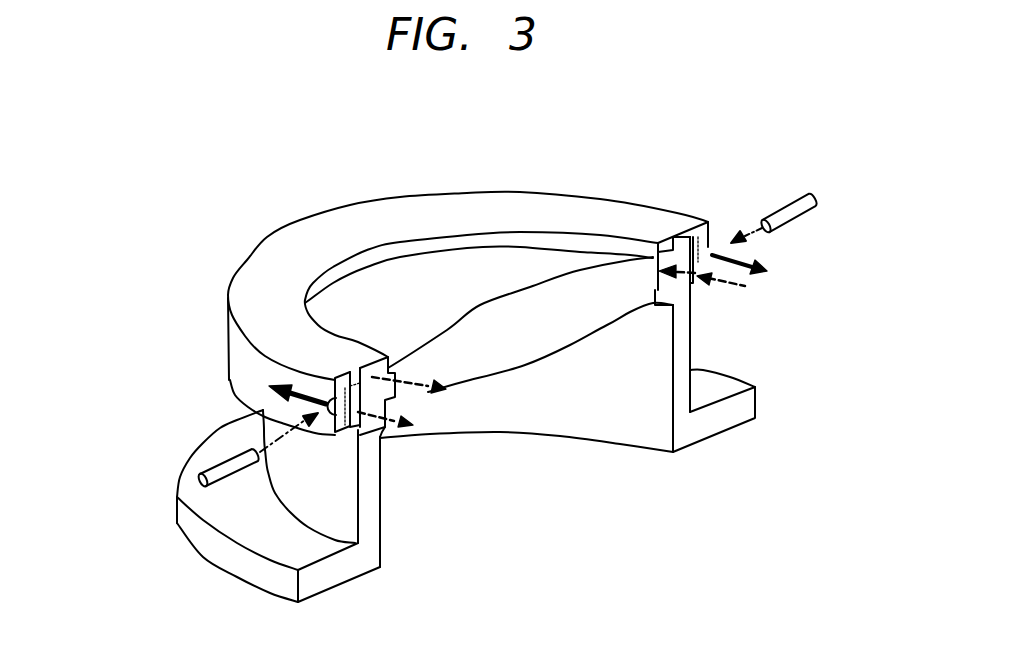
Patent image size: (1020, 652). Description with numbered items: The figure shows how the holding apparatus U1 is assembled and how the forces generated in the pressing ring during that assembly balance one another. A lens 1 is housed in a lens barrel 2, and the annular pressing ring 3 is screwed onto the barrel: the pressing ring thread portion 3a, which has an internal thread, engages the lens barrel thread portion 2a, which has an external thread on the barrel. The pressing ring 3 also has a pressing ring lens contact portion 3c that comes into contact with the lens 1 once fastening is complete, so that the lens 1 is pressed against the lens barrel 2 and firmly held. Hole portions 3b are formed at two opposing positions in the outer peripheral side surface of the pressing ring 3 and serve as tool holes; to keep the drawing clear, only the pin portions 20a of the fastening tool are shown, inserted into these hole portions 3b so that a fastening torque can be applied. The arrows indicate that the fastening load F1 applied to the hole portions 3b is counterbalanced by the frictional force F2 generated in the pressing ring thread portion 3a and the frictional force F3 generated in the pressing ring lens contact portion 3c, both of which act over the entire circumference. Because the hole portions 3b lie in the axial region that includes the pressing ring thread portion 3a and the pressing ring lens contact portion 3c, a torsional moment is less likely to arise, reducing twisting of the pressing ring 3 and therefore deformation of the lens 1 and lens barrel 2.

The holding apparatus U1 is at (410, 137).
The lens 1 is at (478, 367).
The lens barrel 2 is at (232, 525).
The lens barrel thread portion 2a is at (370, 413).
The pressing ring 3 is at (410, 220).
The pressing ring thread portion 3a is at (350, 402).
The hole portions 3b is at (336, 380).
The pressing ring lens contact portion 3c is at (650, 258).
The pin portions 20a is at (223, 467).
The fastening load F1 is at (288, 387).
The frictional force F2 is at (372, 408).
The frictional force F3 is at (412, 385).